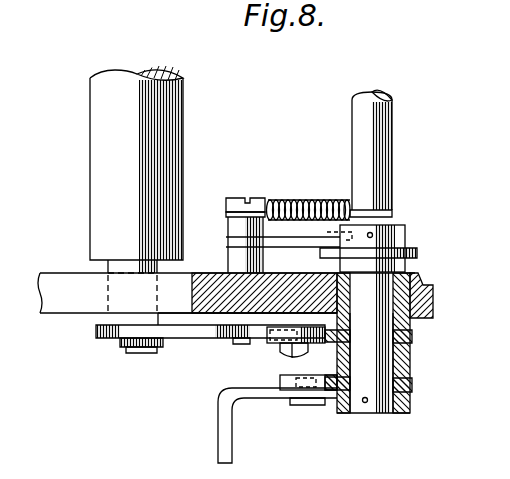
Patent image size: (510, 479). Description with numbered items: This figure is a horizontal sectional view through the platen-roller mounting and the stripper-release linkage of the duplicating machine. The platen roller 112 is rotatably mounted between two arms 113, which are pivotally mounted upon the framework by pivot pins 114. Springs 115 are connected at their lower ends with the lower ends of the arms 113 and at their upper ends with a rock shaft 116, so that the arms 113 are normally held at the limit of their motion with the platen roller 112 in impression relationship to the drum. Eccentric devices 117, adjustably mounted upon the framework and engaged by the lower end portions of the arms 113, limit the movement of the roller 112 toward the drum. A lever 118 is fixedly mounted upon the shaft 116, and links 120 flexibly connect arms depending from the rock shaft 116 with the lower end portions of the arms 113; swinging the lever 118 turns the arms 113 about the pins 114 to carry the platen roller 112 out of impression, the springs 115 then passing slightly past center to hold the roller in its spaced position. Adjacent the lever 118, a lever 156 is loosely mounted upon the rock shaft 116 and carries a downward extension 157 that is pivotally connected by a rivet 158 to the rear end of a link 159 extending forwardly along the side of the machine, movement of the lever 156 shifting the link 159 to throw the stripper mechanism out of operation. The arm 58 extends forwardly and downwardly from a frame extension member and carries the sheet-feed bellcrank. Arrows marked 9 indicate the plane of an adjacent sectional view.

The platen roller 112 is at (97, 104).
The rock shaft 116 is at (362, 116).
The springs 115 is at (312, 205).
The links 120 is at (278, 240).
The arm 58 is at (70, 258).
The eccentric devices 117 is at (305, 305).
The arms 113 is at (190, 330).
The pivot pins 114 is at (145, 355).
The downward extension 157 is at (280, 386).
The link 159 is at (262, 420).
The rivet 158 is at (315, 405).
The lever 156 is at (400, 410).
The lever 118 is at (412, 345).
The section line 9 is at (45, 360).